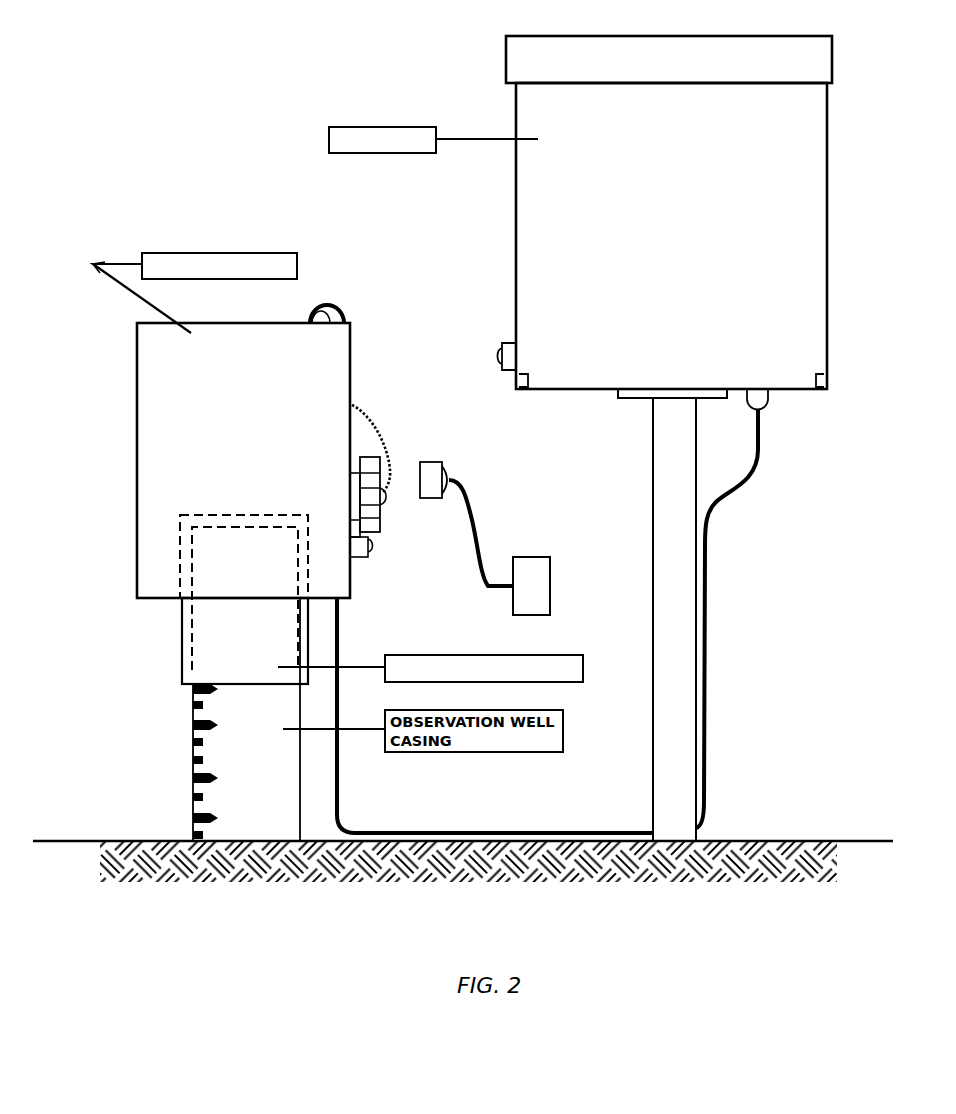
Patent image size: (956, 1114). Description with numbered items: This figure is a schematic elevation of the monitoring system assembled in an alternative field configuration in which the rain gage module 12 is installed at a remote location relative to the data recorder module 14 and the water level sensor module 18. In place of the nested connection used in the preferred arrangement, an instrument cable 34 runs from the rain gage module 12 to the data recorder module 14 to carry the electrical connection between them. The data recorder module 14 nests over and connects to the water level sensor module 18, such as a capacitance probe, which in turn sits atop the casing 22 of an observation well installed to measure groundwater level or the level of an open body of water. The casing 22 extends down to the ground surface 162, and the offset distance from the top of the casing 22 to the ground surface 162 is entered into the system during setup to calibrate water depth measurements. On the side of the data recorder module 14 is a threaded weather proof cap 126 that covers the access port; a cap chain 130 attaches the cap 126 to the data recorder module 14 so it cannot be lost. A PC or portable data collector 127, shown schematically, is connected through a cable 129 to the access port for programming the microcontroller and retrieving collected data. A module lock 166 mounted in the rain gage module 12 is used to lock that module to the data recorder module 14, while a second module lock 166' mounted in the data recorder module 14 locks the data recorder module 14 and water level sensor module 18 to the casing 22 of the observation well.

The rain gage module 12 is at (512, 240).
The data recorder module 14 is at (136, 462).
The water level sensor module 18 is at (180, 648).
The casing of the observation well 22 is at (190, 788).
The instrument cable 34 is at (338, 784).
The threaded weather proof cap 126 is at (371, 513).
The PC or portable data collector 127 is at (534, 586).
The cable 129 is at (482, 520).
The cap chain 130 is at (384, 441).
The ground surface 162 is at (463, 861).
The module lock 166 is at (470, 341).
The module lock 166' is at (400, 559).